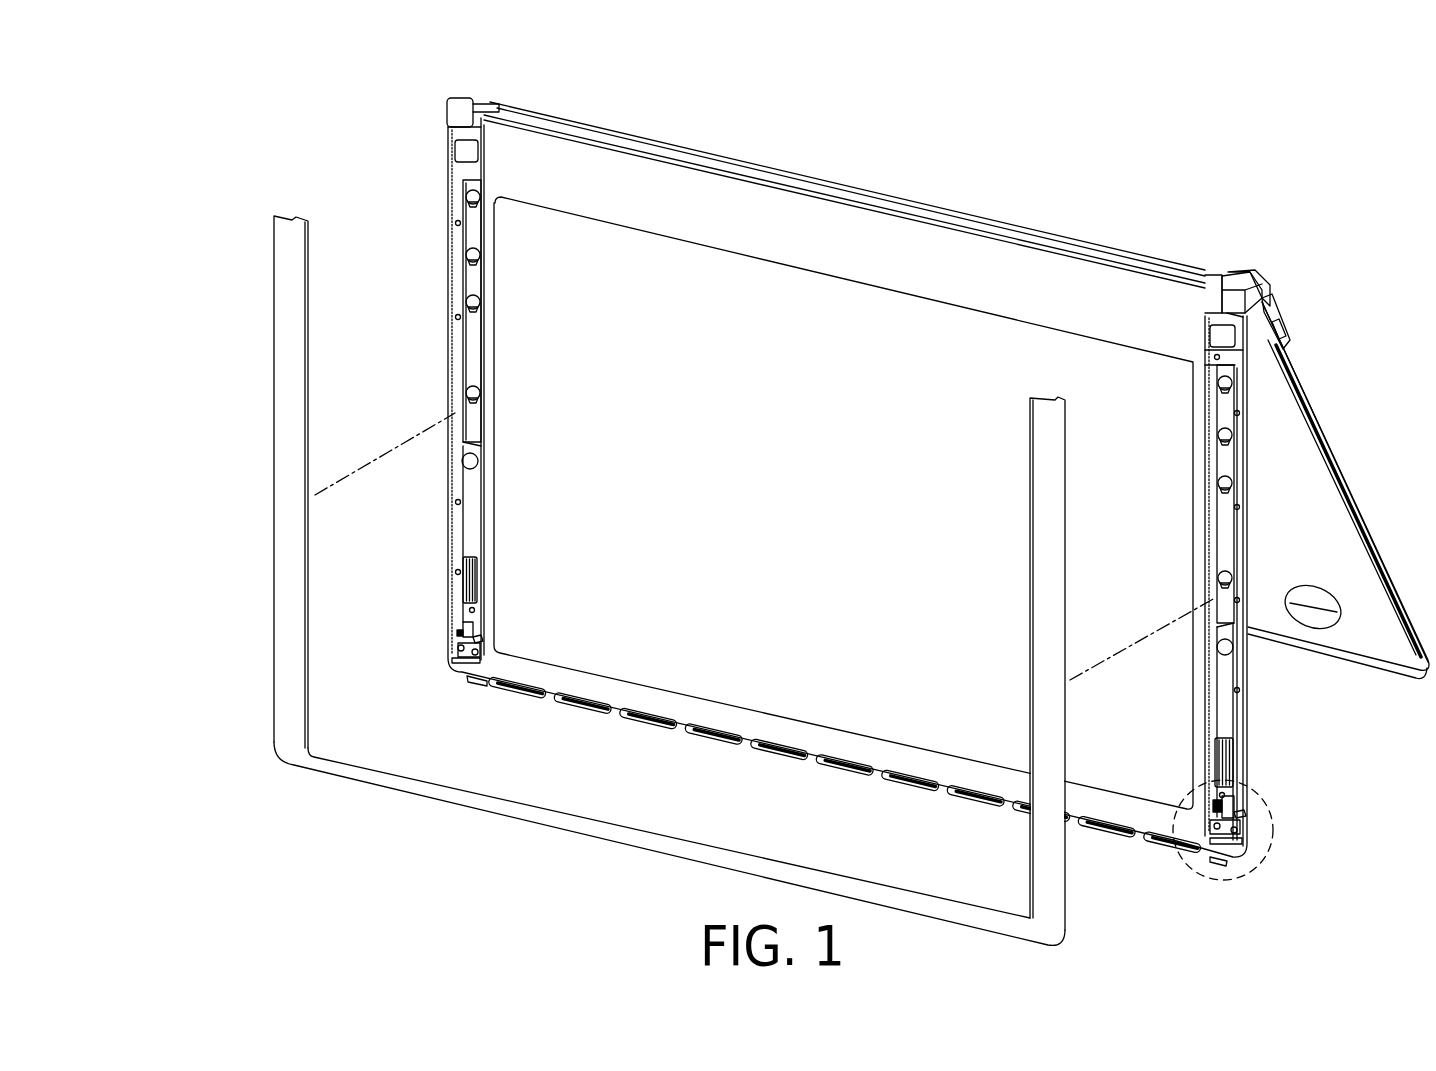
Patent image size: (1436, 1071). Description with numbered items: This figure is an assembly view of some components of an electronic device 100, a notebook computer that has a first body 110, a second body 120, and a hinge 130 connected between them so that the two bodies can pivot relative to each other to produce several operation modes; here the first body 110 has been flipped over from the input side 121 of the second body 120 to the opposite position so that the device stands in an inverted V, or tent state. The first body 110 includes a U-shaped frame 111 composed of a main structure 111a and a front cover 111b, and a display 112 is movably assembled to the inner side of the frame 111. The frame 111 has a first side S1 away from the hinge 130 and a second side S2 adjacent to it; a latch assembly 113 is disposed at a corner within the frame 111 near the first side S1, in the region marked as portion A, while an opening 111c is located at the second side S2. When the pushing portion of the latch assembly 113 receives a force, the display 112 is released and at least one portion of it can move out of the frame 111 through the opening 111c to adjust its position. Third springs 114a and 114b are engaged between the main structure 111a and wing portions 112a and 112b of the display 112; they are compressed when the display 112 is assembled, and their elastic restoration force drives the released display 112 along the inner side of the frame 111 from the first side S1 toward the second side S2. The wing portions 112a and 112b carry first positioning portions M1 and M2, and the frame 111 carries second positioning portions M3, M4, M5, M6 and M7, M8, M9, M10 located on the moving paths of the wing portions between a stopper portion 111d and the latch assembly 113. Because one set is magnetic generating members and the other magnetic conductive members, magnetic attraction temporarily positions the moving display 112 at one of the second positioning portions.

The electronic device 100 is at (1407, 960).
The first body 110 is at (186, 76).
The frame 111 is at (768, 521).
The main structure 111a is at (456, 152).
The front cover 111b is at (669, 546).
The opening 111c is at (1212, 272).
The stopper portion 111d is at (482, 198).
The display 112 is at (847, 484).
The wing portion 112a is at (1218, 716).
The wing portion 112b is at (473, 533).
The latch assembly 113 is at (1221, 878).
The third spring 114a is at (1230, 752).
The third spring 114b is at (463, 583).
The first positioning portion M1 is at (1219, 649).
The first positioning portion M2 is at (462, 460).
The second positioning portion M3 is at (1220, 576).
The second positioning portion M4 is at (1220, 483).
The second positioning portion M5 is at (1220, 435).
The second positioning portion M6 is at (1220, 383).
The second positioning portion M7 is at (466, 393).
The second positioning portion M8 is at (466, 302).
The second positioning portion M9 is at (466, 255).
The second positioning portion M10 is at (466, 198).
The second body 120 is at (1339, 523).
The input side 121 is at (1334, 424).
The hinge 130 is at (1247, 279).
The first side S1 is at (525, 850).
The second side S2 is at (1132, 230).
The portion A is at (1192, 888).